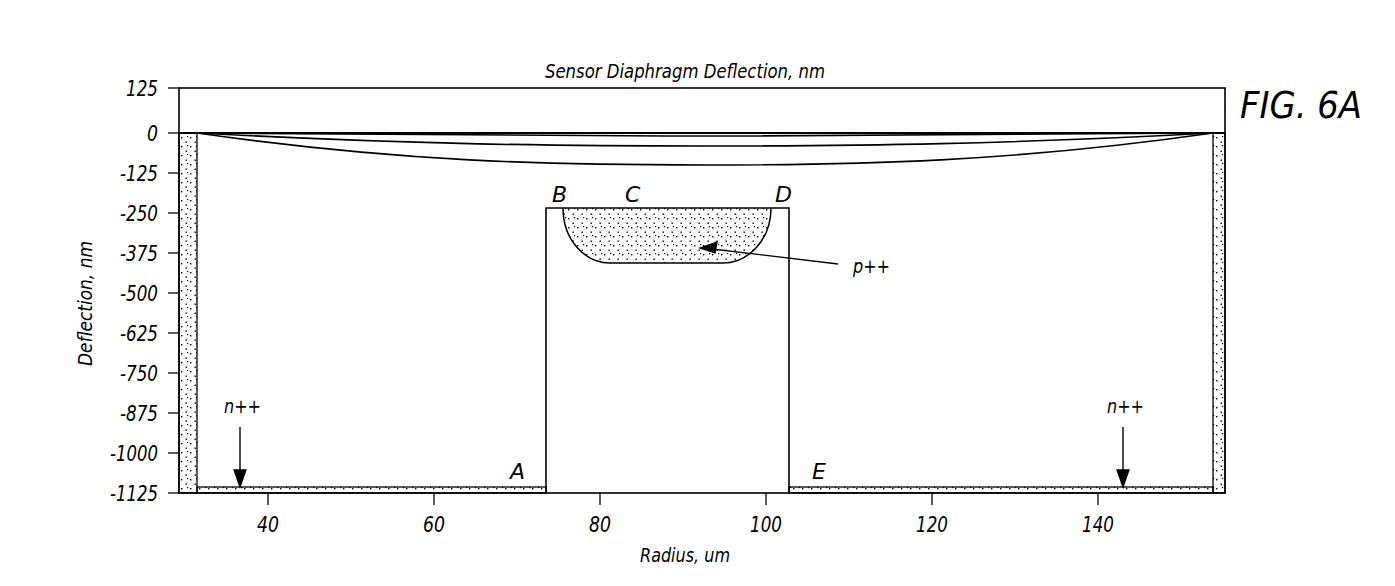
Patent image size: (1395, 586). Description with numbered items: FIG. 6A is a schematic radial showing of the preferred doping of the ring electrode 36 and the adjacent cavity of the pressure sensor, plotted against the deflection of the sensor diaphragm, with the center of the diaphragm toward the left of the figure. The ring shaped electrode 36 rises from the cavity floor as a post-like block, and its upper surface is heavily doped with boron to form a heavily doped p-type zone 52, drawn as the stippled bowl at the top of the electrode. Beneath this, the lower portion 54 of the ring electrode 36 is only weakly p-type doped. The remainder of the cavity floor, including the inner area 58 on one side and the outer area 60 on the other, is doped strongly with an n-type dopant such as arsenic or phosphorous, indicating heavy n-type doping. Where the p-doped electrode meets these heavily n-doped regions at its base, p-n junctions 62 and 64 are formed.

The ring shaped electrode 36 is at (788, 341).
The p++ zone 52 is at (672, 236).
The lower portion of the ring electrode 54 is at (680, 424).
The inner area 58 is at (412, 487).
The outer area 60 is at (945, 487).
The p-n junction 62 is at (520, 495).
The p-n junction 64 is at (818, 495).